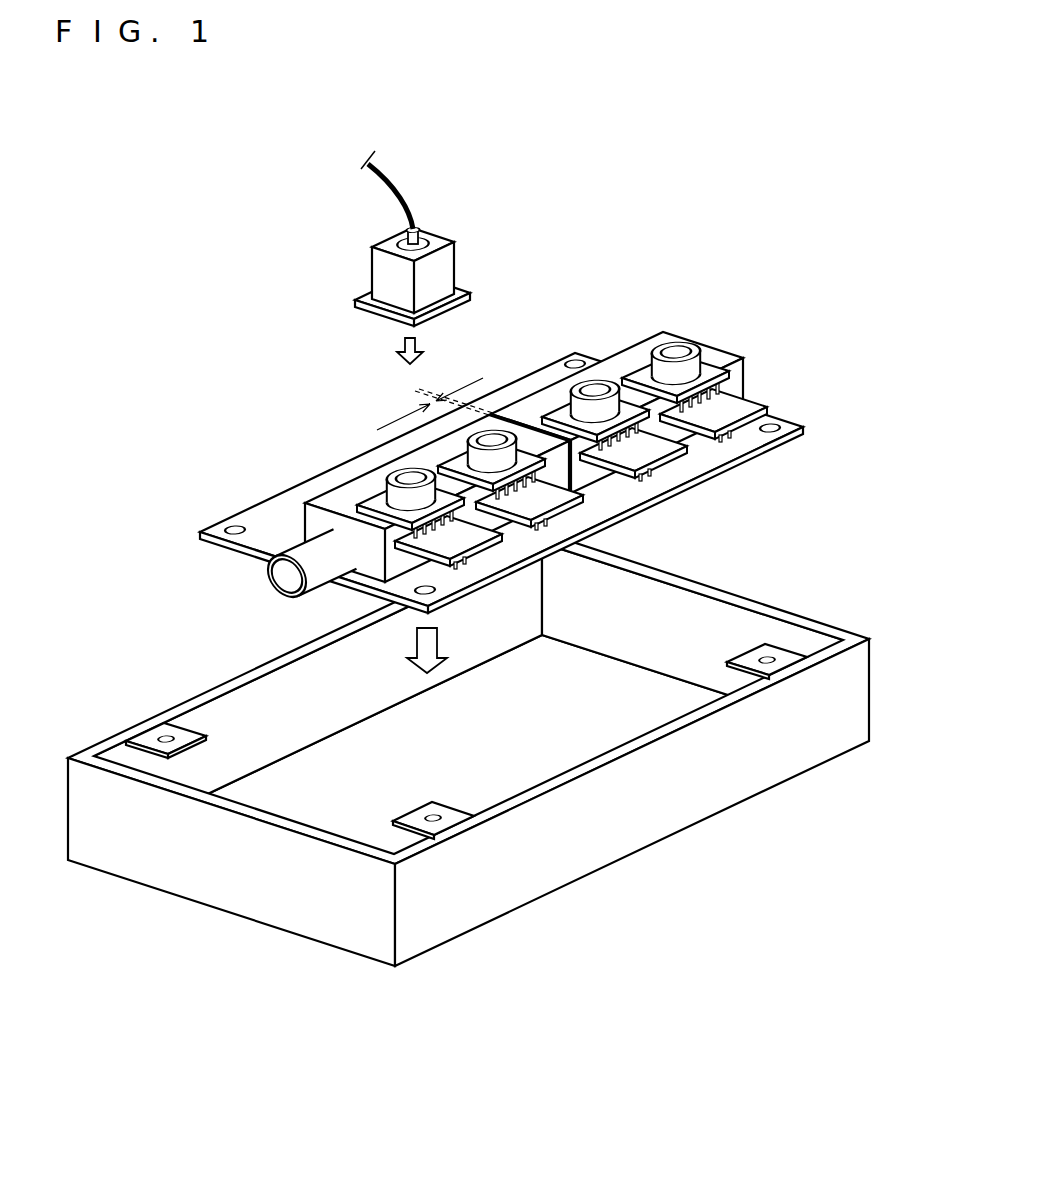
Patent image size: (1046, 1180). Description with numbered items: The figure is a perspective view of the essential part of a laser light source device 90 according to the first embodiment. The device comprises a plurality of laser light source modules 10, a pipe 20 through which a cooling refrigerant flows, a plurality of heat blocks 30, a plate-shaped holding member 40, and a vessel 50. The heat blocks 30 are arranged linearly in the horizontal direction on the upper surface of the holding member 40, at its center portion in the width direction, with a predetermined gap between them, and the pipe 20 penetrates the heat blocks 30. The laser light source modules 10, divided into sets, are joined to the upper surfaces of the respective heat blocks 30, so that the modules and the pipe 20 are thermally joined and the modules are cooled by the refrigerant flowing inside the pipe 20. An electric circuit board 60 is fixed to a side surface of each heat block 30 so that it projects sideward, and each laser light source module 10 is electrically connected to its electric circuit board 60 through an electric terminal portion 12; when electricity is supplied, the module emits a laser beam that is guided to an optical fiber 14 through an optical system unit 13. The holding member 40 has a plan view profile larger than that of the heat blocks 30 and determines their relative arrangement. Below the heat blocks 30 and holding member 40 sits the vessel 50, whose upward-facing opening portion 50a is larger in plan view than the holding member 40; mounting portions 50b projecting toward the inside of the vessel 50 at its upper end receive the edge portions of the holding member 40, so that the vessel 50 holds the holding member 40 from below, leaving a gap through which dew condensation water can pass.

The laser light source device 90 is at (146, 118).
The laser light source module 10 is at (672, 350).
The electric terminal portion 12 is at (708, 398).
The optical system unit 13 is at (440, 276).
The optical fiber 14 is at (403, 176).
The pipe 20 is at (305, 555).
The heat block 30 is at (342, 502).
The holding member 40 is at (640, 490).
The vessel 50 is at (468, 770).
The opening portion 50a is at (243, 797).
The mounting portion 50b is at (153, 733).
The electric circuit board 60 is at (770, 400).